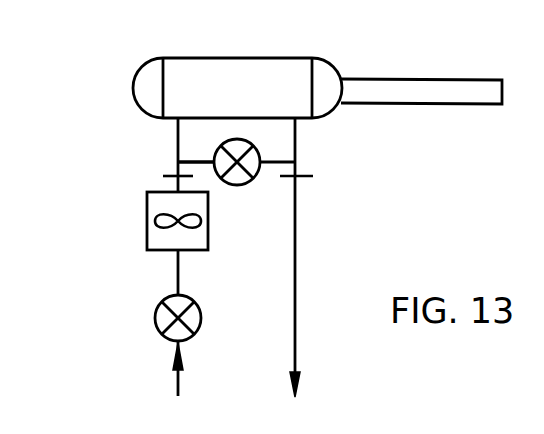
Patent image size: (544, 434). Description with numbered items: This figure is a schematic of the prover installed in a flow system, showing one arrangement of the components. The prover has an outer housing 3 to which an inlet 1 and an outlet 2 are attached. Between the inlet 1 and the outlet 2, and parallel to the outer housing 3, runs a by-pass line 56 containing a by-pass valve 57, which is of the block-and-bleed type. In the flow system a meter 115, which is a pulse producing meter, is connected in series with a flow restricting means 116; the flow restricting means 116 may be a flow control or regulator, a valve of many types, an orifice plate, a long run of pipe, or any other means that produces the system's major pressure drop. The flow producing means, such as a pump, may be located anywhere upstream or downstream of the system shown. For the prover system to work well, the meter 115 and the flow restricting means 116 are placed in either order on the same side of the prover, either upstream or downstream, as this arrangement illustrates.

The outer housing 3 is at (278, 58).
The inlet 1 is at (158, 175).
The outlet 2 is at (313, 176).
The by-pass line 56 is at (197, 161).
The by-pass valve 57 is at (237, 140).
The meter 115 is at (147, 233).
The flow restricting means 116 is at (155, 325).